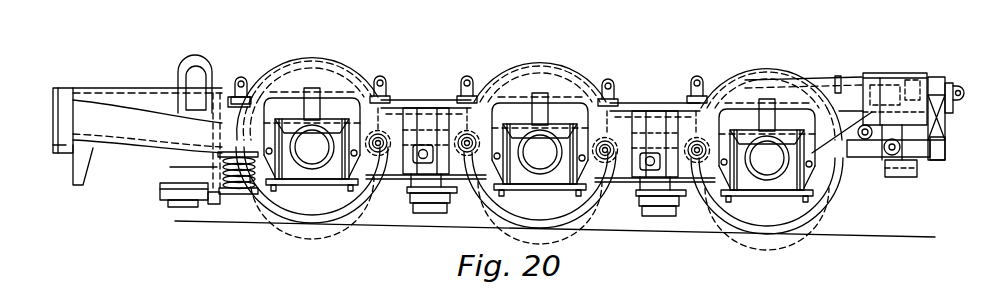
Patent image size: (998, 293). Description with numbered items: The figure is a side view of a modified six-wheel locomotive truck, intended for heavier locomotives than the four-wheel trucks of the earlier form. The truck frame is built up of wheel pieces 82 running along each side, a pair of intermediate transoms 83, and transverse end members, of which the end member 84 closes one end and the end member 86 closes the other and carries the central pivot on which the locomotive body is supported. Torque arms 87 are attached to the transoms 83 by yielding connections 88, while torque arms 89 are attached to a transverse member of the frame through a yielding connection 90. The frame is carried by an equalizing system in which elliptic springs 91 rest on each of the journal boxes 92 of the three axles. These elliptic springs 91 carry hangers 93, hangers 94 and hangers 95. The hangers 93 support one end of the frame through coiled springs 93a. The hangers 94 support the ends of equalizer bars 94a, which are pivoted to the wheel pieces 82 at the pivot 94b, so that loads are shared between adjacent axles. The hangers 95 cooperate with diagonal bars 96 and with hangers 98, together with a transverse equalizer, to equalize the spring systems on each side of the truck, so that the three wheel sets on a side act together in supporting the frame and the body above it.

The wheel pieces 82 is at (405, 182).
The intermediate transoms 83 is at (430, 130).
The transverse end member 84 is at (78, 117).
The transverse end member 86 is at (867, 74).
The torque arms 87 is at (463, 211).
The yielding connections 88 is at (437, 93).
The torque arms 89 is at (232, 203).
The yielding connection 90 is at (178, 207).
The elliptic springs 91 is at (288, 93).
The journal boxes 92 is at (298, 178).
The hangers 93 is at (240, 87).
The coiled springs 93a is at (187, 153).
The hangers 94 is at (382, 78).
The equalizer bars 94a is at (404, 180).
The pivot 94b is at (416, 146).
The hangers 95 is at (840, 74).
The diagonal bars 96 is at (870, 156).
The hangers 98 is at (947, 130).